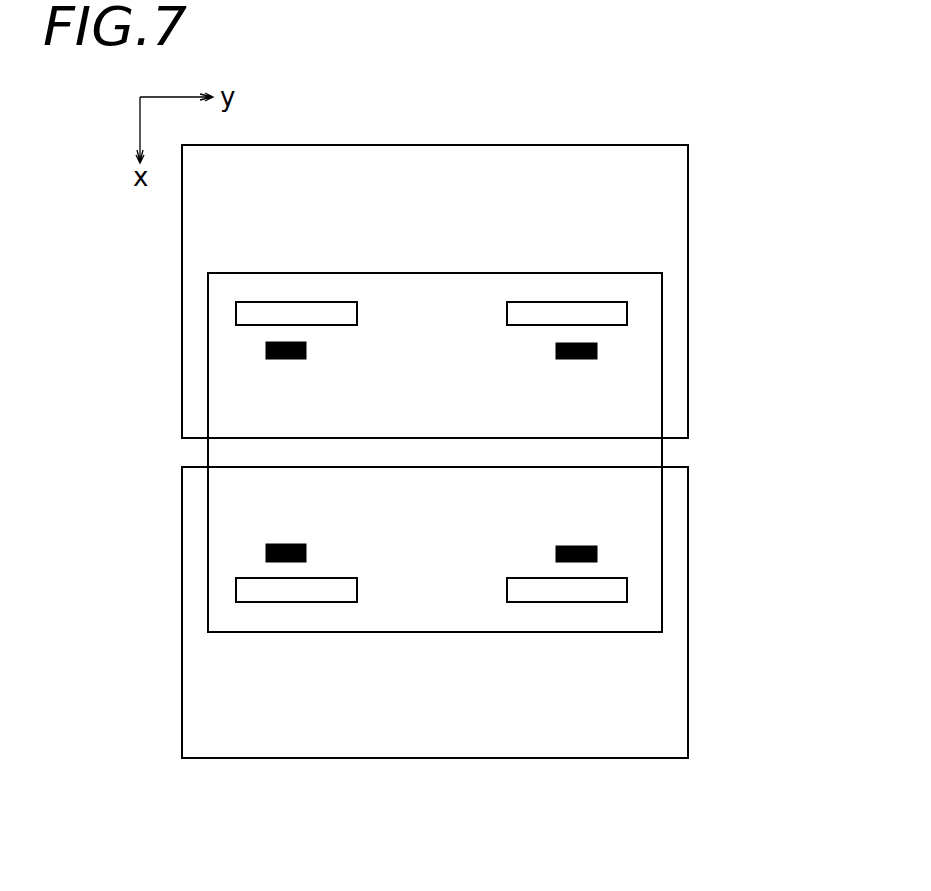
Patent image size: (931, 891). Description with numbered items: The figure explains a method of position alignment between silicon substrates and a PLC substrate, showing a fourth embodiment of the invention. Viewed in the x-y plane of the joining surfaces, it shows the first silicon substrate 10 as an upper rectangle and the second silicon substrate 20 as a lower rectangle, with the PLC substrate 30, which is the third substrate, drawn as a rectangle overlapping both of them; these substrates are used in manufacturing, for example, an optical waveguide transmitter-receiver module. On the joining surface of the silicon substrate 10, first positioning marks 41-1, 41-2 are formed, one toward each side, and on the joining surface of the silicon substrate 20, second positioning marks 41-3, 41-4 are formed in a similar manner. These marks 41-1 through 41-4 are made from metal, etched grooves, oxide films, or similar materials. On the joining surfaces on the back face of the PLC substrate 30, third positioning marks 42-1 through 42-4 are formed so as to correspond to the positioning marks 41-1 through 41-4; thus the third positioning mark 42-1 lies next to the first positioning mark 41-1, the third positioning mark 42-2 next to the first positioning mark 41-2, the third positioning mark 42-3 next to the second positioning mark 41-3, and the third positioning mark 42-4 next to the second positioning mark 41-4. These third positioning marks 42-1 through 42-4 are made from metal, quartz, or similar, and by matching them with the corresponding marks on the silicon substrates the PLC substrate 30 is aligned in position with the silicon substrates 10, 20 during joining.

The first silicon substrate 10 is at (655, 208).
The second silicon substrate 20 is at (497, 740).
The PLC substrate 30 is at (653, 415).
The first positioning mark 41-1 is at (236, 315).
The first positioning mark 41-2 is at (627, 313).
The second positioning mark 41-3 is at (236, 590).
The second positioning mark 41-4 is at (627, 590).
The third positioning mark 42-1 is at (266, 355).
The third positioning mark 42-2 is at (597, 350).
The third positioning mark 42-3 is at (266, 553).
The third positioning mark 42-4 is at (597, 552).